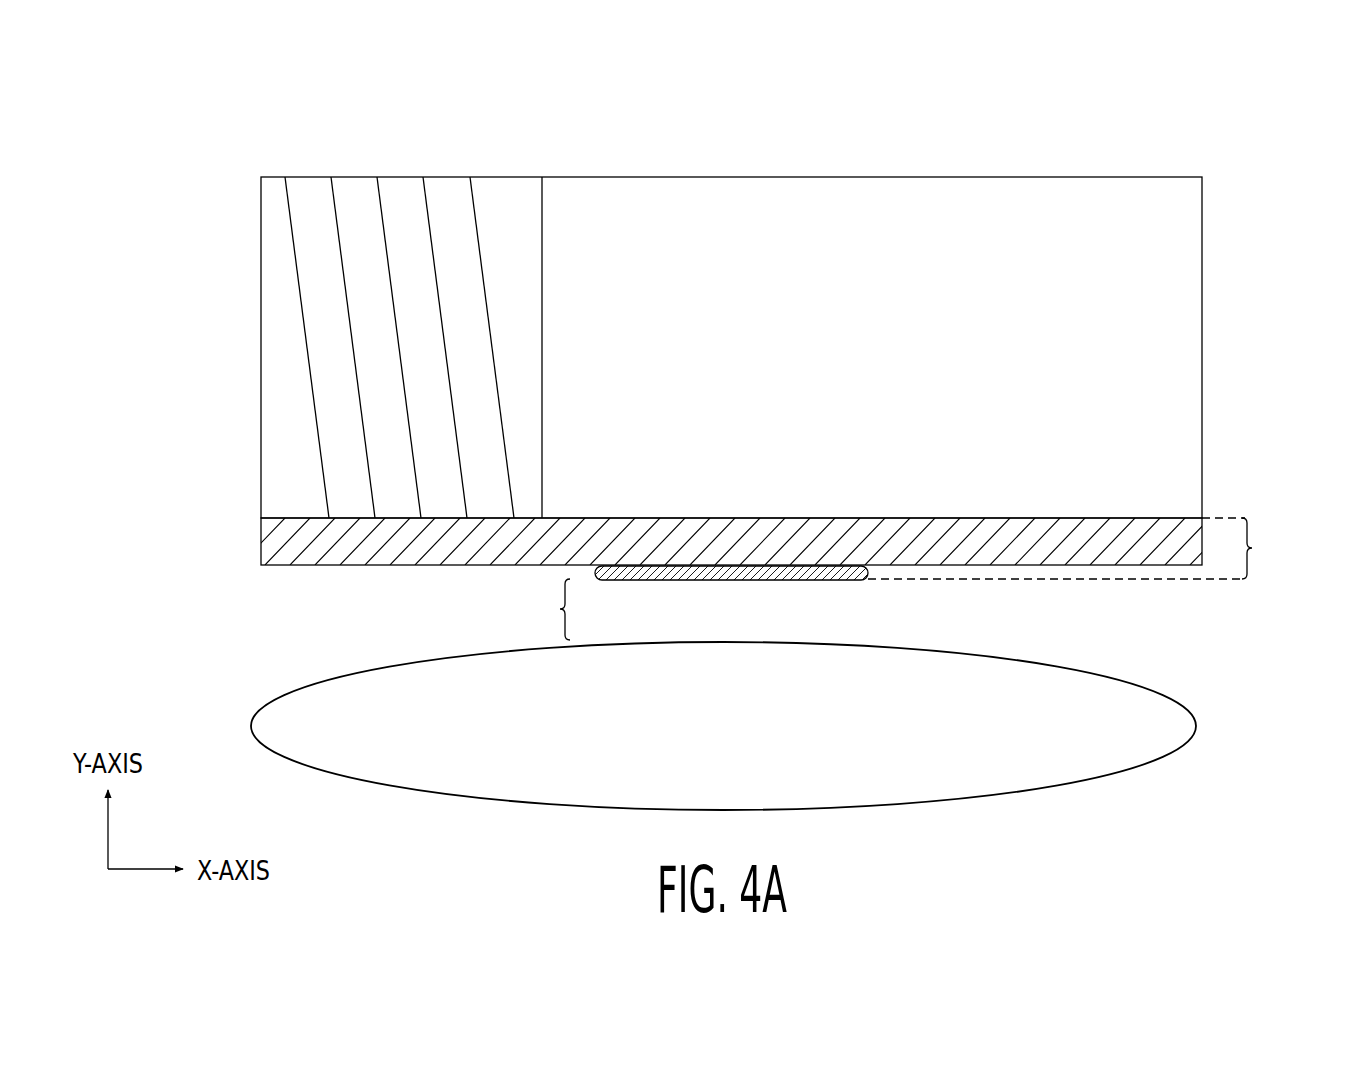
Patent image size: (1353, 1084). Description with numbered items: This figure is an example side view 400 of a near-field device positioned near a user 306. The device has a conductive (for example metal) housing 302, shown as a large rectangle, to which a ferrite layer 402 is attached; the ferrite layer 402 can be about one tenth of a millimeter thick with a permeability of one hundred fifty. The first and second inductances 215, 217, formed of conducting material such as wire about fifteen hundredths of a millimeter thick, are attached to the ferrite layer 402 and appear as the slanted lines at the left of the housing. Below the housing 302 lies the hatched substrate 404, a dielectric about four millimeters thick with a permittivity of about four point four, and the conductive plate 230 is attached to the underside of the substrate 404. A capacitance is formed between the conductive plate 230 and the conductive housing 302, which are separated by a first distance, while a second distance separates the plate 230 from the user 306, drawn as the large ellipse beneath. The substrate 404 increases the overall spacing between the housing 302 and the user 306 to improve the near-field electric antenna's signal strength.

The example side view 400 is at (159, 150).
The conductive housing 302 is at (1036, 176).
The inductance (L1) 215 is at (289, 198).
The inductance (L2) 217 is at (477, 203).
The ferrite layer 402 is at (525, 250).
The substrate 404 is at (849, 534).
The conductive plate 230 is at (680, 556).
The user 306 is at (1197, 726).